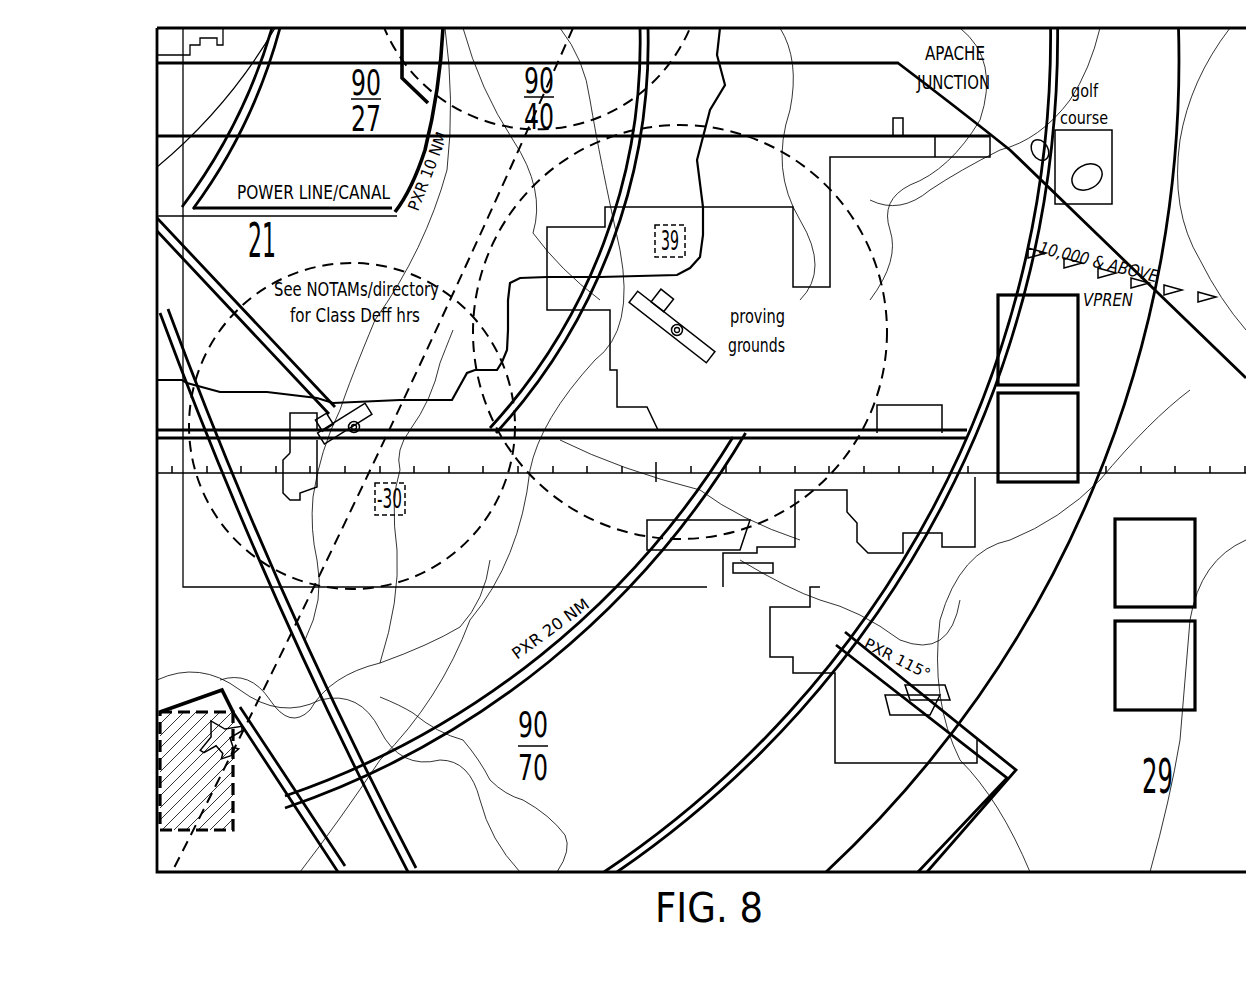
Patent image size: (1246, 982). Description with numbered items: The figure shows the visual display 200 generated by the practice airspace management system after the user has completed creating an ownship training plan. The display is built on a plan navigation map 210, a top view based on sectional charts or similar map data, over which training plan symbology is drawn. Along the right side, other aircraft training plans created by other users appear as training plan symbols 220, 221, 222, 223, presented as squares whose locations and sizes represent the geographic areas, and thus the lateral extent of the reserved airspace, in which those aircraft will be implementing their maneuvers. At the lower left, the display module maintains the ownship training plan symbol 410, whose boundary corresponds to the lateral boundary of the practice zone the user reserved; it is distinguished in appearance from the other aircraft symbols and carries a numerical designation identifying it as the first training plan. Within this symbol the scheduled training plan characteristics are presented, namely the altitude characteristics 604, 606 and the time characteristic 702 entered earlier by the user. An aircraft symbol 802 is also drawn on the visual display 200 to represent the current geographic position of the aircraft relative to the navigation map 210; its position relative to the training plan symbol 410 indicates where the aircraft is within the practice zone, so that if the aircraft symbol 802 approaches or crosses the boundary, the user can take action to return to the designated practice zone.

The visual display 200 is at (148, 79).
The plan navigation map 210 is at (827, 54).
The training plan symbol 220 is at (1078, 365).
The training plan symbol 221 is at (1078, 430).
The training plan symbol 222 is at (1115, 572).
The training plan symbol 223 is at (1115, 640).
The training plan symbol 410 is at (160, 716).
The altitude characteristic 604 is at (176, 760).
The altitude characteristic 606 is at (176, 790).
The time characteristic 702 is at (205, 820).
The aircraft symbol 802 is at (222, 716).